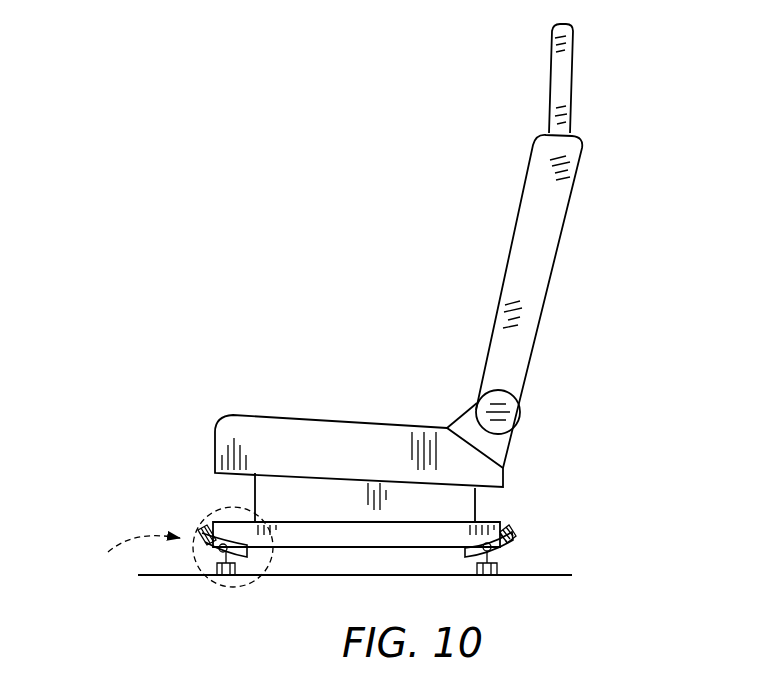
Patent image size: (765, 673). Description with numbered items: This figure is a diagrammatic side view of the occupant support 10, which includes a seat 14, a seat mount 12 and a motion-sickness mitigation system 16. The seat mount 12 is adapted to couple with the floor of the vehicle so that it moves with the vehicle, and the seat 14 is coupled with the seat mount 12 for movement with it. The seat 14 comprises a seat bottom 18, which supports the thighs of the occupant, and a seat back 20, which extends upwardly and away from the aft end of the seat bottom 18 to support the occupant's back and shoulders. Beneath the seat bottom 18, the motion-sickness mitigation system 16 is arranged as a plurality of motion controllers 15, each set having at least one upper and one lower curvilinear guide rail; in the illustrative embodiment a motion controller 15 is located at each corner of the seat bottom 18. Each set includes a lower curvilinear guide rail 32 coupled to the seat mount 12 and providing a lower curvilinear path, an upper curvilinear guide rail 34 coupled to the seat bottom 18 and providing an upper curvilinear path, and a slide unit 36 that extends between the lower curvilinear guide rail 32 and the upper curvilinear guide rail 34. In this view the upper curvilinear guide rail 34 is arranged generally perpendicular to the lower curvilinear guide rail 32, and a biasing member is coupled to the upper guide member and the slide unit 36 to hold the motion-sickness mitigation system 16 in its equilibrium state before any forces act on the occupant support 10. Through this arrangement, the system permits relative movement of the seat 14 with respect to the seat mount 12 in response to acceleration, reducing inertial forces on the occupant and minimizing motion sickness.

The occupant support 10 is at (628, 80).
The seat mount 12 is at (531, 577).
The seat 14 is at (583, 217).
The motion controller 15 is at (200, 511).
The motion-sickness mitigation system 16 is at (531, 507).
The seat bottom 18 is at (326, 414).
The seat back 20 is at (506, 232).
The lower curvilinear guide rail 32 is at (240, 578).
The upper curvilinear guide rail 34 is at (199, 530).
The slide unit 36 is at (217, 560).